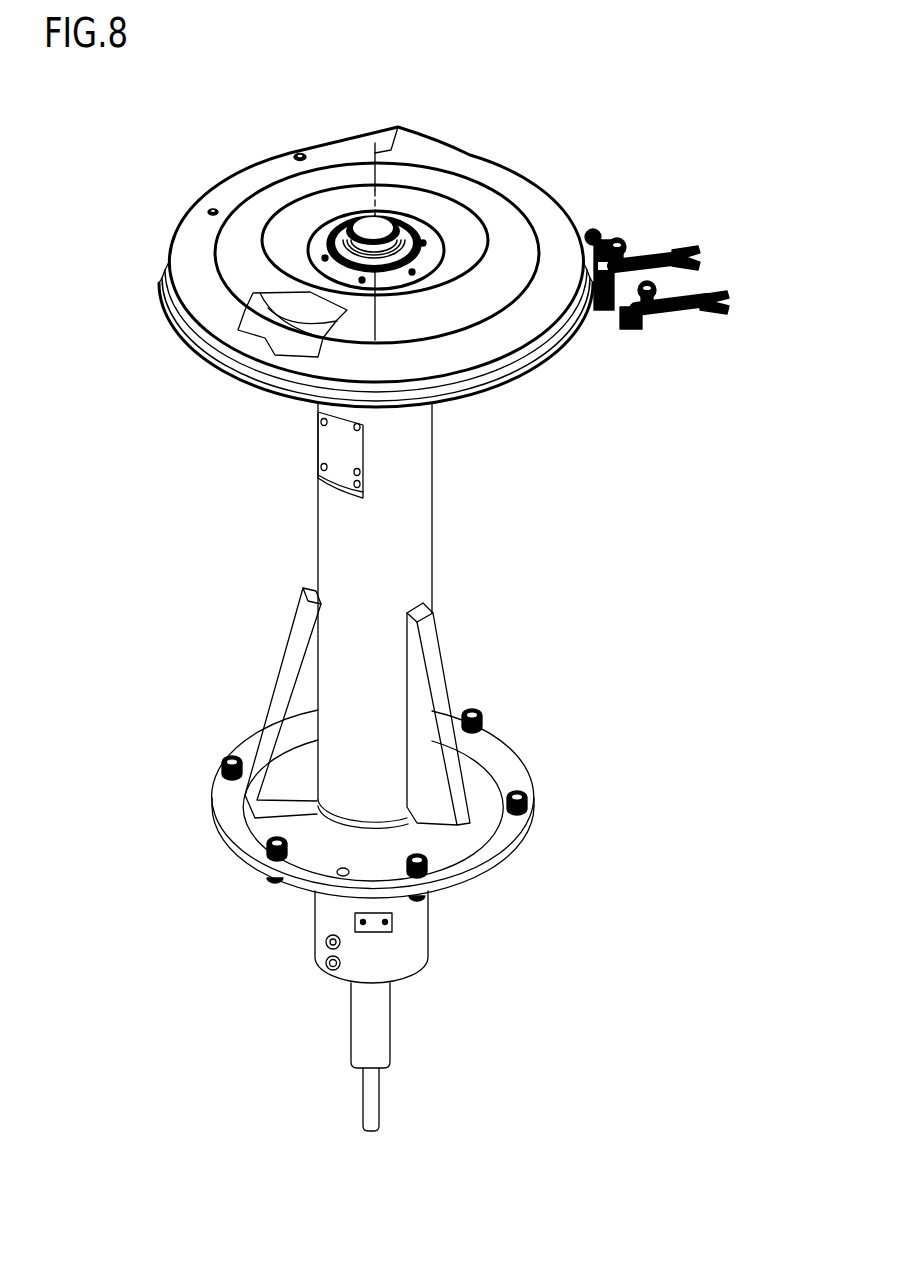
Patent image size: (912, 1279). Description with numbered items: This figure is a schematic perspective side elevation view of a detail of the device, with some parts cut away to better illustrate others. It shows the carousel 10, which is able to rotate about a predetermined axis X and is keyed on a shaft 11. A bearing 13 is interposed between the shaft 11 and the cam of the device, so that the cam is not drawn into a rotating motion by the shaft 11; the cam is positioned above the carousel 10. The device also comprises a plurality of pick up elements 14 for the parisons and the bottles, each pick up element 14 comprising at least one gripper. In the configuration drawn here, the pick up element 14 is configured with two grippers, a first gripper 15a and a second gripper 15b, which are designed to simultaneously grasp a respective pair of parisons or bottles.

The carousel 10 is at (262, 350).
The shaft 11 is at (398, 212).
The bearing 13 is at (325, 257).
The pick up element 14 is at (660, 234).
The first gripper 15a is at (720, 288).
The second gripper 15b is at (700, 270).
The predetermined axis X is at (400, 128).